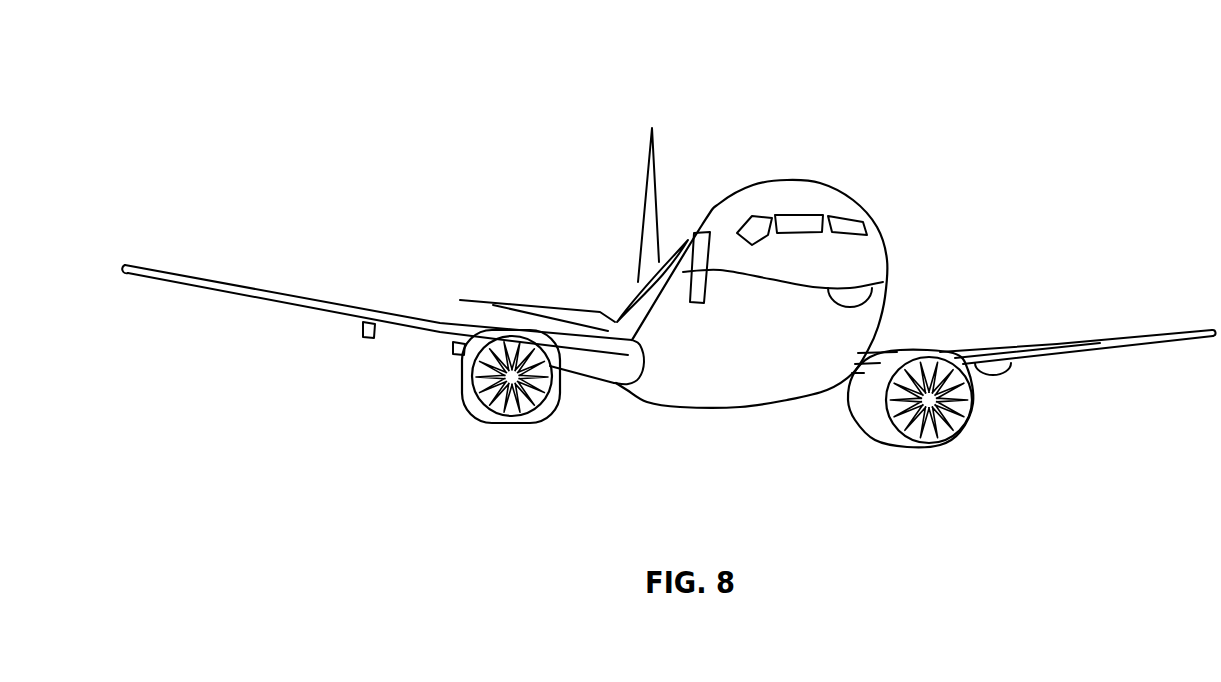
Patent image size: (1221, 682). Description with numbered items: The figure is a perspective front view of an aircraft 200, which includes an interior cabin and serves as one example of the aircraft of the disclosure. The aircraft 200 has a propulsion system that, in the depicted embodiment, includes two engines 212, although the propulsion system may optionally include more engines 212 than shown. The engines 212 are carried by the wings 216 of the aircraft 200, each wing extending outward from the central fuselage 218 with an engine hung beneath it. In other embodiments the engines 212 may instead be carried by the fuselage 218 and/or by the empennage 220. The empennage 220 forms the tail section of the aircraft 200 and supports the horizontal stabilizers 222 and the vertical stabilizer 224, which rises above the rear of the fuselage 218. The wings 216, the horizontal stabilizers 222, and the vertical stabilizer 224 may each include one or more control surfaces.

The aircraft 200 is at (396, 66).
The engines 212 is at (505, 425).
The wings 216 is at (272, 292).
The fuselage 218 is at (883, 252).
The empennage 220 is at (638, 278).
The horizontal stabilizers 222 is at (502, 303).
The vertical stabilizer 224 is at (650, 172).